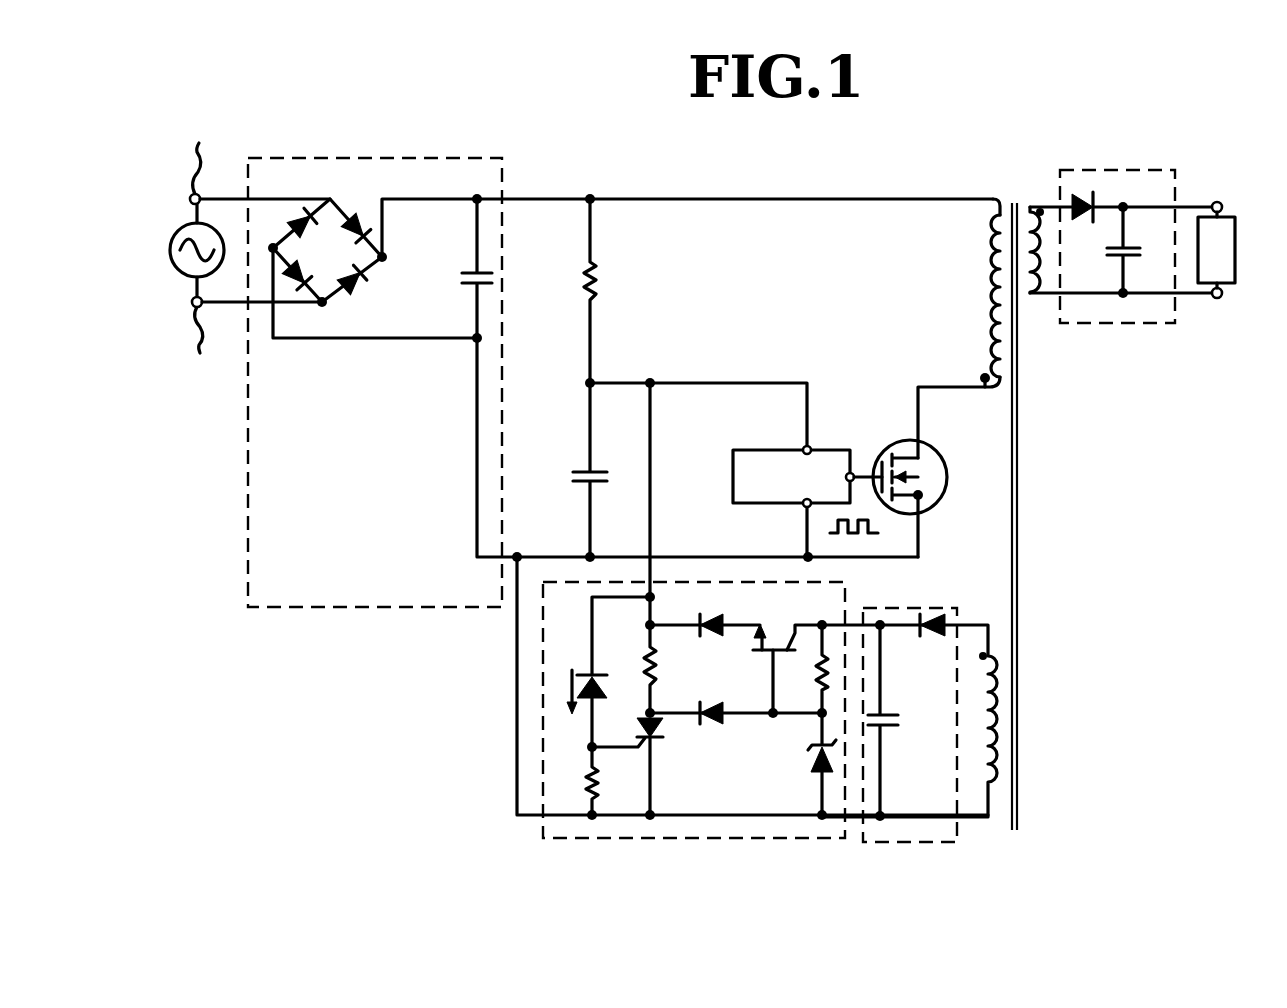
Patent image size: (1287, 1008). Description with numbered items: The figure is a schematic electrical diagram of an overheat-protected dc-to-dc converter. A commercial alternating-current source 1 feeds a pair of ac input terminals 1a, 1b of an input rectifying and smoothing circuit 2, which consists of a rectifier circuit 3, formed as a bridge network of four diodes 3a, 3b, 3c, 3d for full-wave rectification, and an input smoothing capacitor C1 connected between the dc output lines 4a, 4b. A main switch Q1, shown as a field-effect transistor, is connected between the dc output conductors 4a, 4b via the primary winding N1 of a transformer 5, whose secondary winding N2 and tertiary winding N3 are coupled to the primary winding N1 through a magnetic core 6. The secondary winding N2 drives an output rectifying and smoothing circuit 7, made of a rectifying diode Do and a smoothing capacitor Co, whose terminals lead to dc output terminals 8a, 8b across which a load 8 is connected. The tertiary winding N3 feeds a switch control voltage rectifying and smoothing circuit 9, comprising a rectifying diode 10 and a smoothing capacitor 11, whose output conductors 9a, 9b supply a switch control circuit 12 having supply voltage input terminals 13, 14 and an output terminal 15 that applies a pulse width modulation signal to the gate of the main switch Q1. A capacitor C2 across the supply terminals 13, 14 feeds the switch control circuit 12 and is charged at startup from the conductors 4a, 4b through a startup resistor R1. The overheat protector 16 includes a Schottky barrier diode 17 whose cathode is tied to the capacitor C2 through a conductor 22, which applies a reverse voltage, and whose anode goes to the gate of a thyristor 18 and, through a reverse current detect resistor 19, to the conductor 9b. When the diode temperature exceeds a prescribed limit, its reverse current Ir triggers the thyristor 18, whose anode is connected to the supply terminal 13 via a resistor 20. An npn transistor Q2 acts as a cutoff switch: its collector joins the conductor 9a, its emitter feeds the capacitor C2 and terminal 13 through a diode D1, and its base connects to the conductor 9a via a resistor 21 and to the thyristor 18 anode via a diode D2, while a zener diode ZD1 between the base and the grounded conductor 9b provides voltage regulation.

The commercial alternating-current source 1 is at (170, 252).
The ac input terminal 1a is at (201, 155).
The ac input terminal 1b is at (196, 334).
The input rectifying and smoothing circuit 2 is at (370, 140).
The rectifier circuit 3 is at (383, 268).
The diode 3a is at (360, 209).
The diode 3b is at (359, 298).
The diode 3c is at (309, 266).
The diode 3d is at (286, 222).
The dc output line 4a is at (529, 198).
The dc output line 4b is at (477, 387).
The transformer 5 is at (1048, 507).
The magnetic core 6 is at (1018, 425).
The output rectifying and smoothing circuit 7 is at (1180, 182).
The load 8 is at (1236, 250).
The dc output terminal 8a is at (1217, 202).
The dc output terminal 8b is at (1217, 298).
The switch control voltage rectifying and smoothing circuit 9 is at (937, 605).
The output conductor 9a is at (856, 622).
The output conductor 9b is at (853, 820).
The rectifying diode 10 is at (931, 638).
The smoothing capacitor 11 is at (885, 730).
The switch control circuit 12 is at (733, 478).
The supply voltage input terminal 13 is at (802, 446).
The supply voltage input terminal 14 is at (802, 506).
The output terminal 15 is at (862, 508).
The overheat protector 16 is at (540, 835).
The Schottky barrier diode 17 is at (602, 674).
The thyristor 18 is at (644, 728).
The reverse current detect resistor 19 is at (600, 781).
The resistor 20 is at (662, 668).
The resistor 21 is at (817, 678).
The conductor 22 is at (588, 620).
The input smoothing capacitor C1 is at (463, 287).
The capacitor C2 is at (584, 468).
The startup resistor R1 is at (598, 279).
The main switch Q1 is at (923, 446).
The npn transistor Q2 is at (788, 644).
The diode D1 is at (700, 620).
The diode D2 is at (706, 729).
The zener diode ZD1 is at (811, 757).
The primary winding N1 is at (979, 268).
The secondary winding N2 is at (1027, 292).
The tertiary winding N3 is at (999, 765).
The rectifying diode Do is at (1090, 227).
The smoothing capacitor Co is at (1140, 238).
The reverse current Ir is at (561, 702).